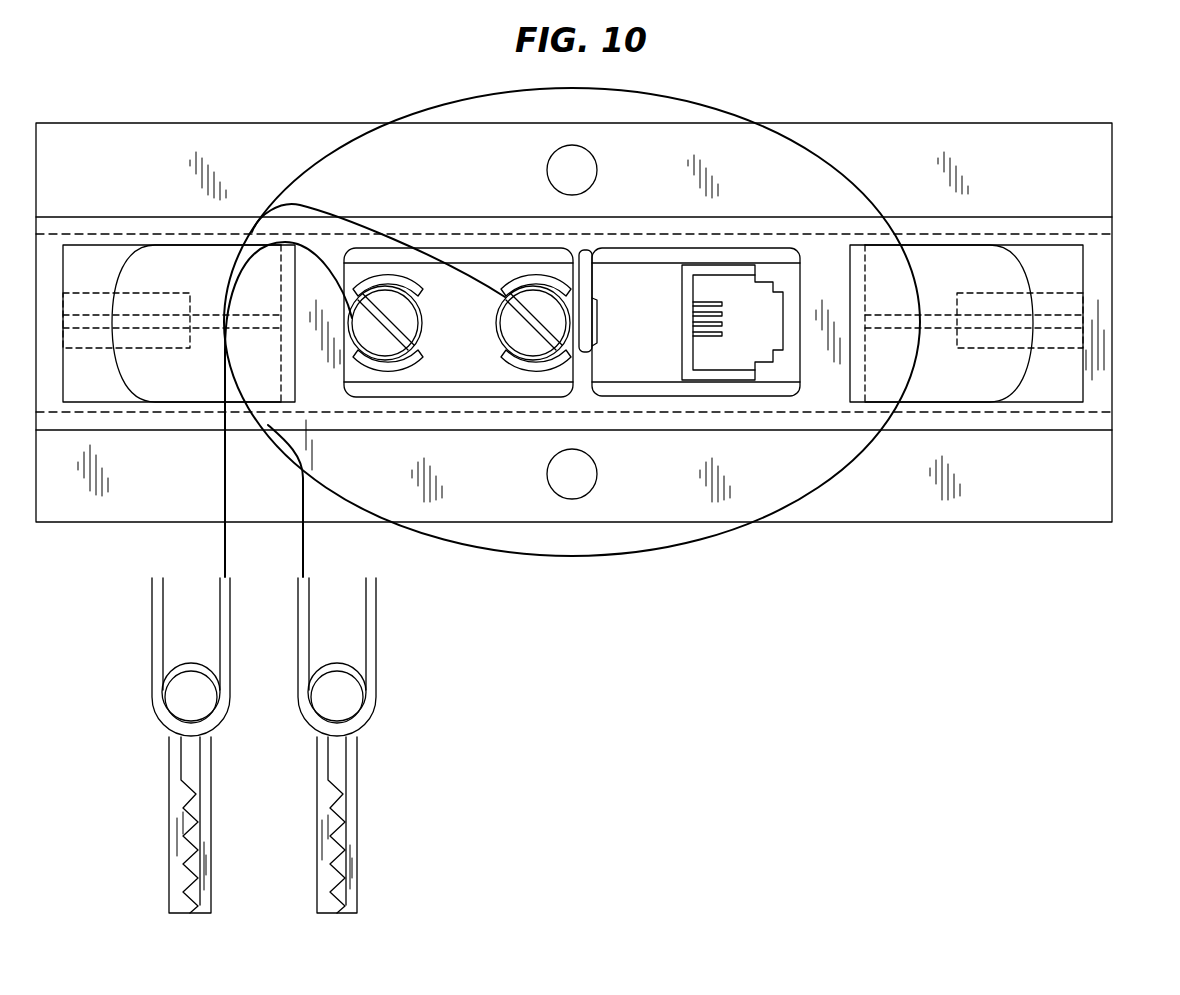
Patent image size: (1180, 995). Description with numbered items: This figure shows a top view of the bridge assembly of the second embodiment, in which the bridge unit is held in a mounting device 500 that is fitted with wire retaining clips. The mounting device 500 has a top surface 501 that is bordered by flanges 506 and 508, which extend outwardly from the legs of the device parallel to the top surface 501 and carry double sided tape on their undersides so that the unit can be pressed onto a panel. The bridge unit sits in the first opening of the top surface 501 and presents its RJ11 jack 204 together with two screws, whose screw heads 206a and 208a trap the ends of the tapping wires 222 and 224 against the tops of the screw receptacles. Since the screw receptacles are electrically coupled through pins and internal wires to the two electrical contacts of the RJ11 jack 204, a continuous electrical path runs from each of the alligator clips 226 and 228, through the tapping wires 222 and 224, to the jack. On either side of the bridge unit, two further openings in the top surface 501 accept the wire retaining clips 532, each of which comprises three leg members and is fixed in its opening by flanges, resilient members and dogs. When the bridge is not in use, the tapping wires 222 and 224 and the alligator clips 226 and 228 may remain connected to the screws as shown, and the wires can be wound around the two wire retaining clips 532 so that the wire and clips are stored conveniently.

The mounting device 500 is at (1093, 108).
The top surface 501 is at (1100, 283).
The flange 506 is at (118, 135).
The flange 508 is at (118, 503).
The wire retaining clip 532 is at (188, 262).
The screw head 208a is at (410, 316).
The screw head 206a is at (507, 335).
The RJ11 jack 204 is at (755, 325).
The tapping wire 222 is at (223, 488).
The tapping wire 224 is at (302, 510).
The first alligator clip 226 is at (212, 825).
The second alligator clip 228 is at (358, 810).